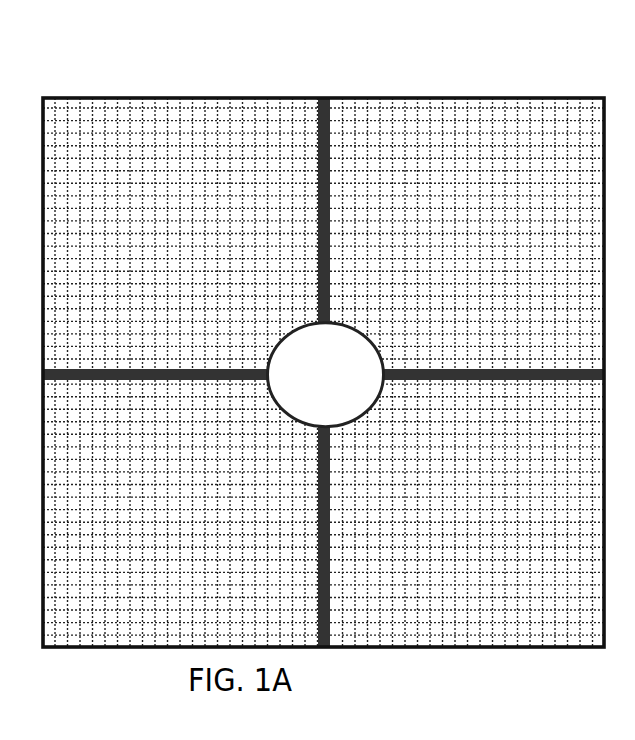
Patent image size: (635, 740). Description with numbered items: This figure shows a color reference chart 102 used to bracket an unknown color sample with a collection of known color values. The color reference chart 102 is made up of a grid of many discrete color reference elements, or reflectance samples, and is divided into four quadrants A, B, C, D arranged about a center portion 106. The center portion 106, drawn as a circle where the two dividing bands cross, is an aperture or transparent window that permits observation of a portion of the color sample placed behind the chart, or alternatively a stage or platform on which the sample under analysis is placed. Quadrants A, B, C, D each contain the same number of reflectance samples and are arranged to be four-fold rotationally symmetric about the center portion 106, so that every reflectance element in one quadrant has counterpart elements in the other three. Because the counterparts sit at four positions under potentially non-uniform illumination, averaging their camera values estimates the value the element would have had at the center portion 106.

The color reference chart 102 is at (323, 96).
The center portion 106 is at (326, 375).
The quadrant A is at (180, 233).
The quadrant B is at (467, 233).
The quadrant C is at (180, 513).
The quadrant D is at (467, 513).